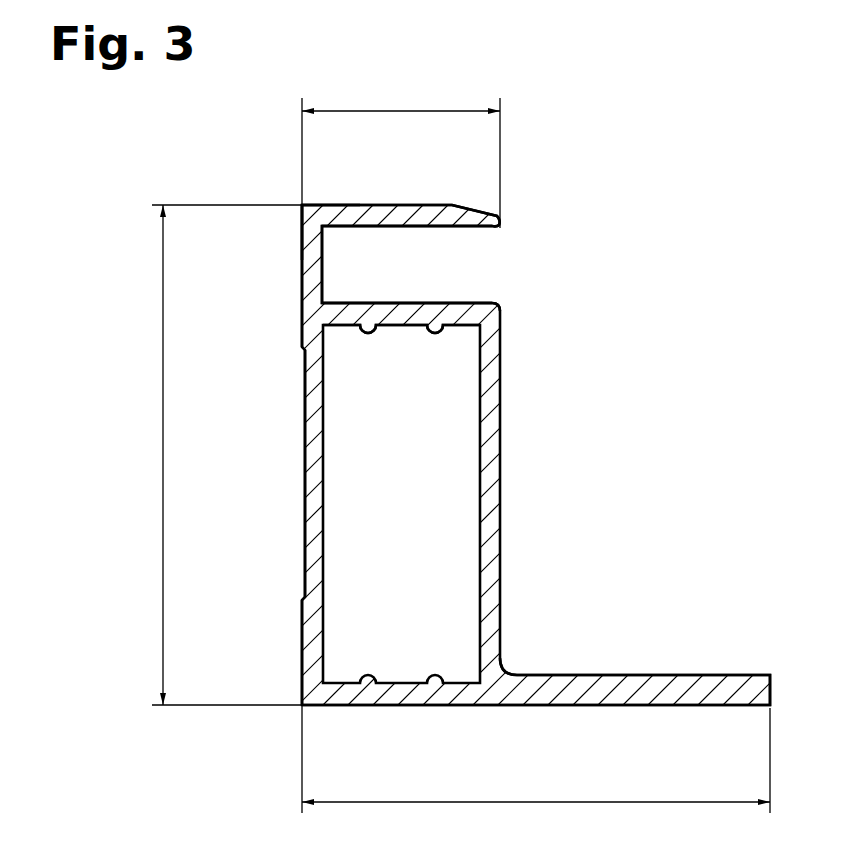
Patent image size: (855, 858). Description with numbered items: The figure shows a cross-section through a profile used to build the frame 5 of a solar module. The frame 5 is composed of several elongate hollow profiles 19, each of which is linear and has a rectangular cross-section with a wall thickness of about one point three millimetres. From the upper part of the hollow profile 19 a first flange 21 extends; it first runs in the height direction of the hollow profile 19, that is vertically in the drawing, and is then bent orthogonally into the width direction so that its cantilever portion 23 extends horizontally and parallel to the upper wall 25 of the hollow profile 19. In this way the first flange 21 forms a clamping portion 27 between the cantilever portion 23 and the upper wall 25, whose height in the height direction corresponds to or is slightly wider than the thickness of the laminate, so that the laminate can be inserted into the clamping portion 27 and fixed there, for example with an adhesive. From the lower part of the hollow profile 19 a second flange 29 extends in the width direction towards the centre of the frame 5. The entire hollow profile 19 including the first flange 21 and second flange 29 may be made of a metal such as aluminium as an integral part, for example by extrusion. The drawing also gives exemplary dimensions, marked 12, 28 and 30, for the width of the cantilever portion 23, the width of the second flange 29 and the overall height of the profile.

The frame 5 is at (72, 142).
The hollow profile 19 is at (280, 482).
The first flange 21 is at (270, 188).
The cantilever portion 23 is at (388, 212).
The upper wall 25 is at (395, 312).
The clamping portion 27 is at (492, 287).
The second flange 29 is at (623, 706).
The flange width 12 is at (401, 153).
The base width 28 is at (536, 759).
The profile height 30 is at (216, 455).